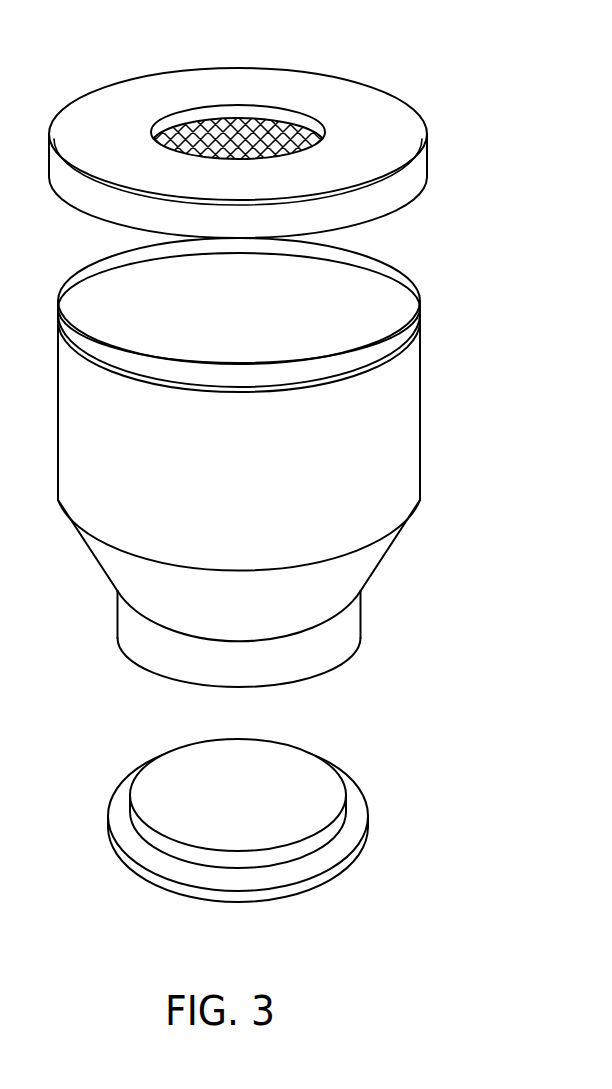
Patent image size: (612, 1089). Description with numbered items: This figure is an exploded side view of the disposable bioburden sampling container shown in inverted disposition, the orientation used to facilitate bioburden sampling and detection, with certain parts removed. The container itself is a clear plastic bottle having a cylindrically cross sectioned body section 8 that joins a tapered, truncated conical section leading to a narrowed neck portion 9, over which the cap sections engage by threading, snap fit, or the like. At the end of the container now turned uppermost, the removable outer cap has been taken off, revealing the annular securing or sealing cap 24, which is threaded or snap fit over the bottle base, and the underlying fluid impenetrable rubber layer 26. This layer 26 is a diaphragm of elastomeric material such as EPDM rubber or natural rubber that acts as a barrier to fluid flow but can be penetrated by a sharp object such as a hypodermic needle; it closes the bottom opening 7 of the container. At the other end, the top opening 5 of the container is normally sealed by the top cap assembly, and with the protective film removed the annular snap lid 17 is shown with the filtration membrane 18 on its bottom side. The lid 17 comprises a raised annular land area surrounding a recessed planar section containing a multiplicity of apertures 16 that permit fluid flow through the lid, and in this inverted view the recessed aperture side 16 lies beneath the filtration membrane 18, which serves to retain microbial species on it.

The top opening 5 is at (328, 672).
The bottom opening 7 is at (388, 310).
The body section 8 is at (402, 425).
The neck portion 9 is at (343, 632).
The apertures 16 is at (131, 862).
The annular sealing lid 17 is at (357, 818).
The filtration membrane 18 is at (303, 780).
The sealing cap 24 is at (413, 175).
The rubber diaphragm 26 is at (280, 119).